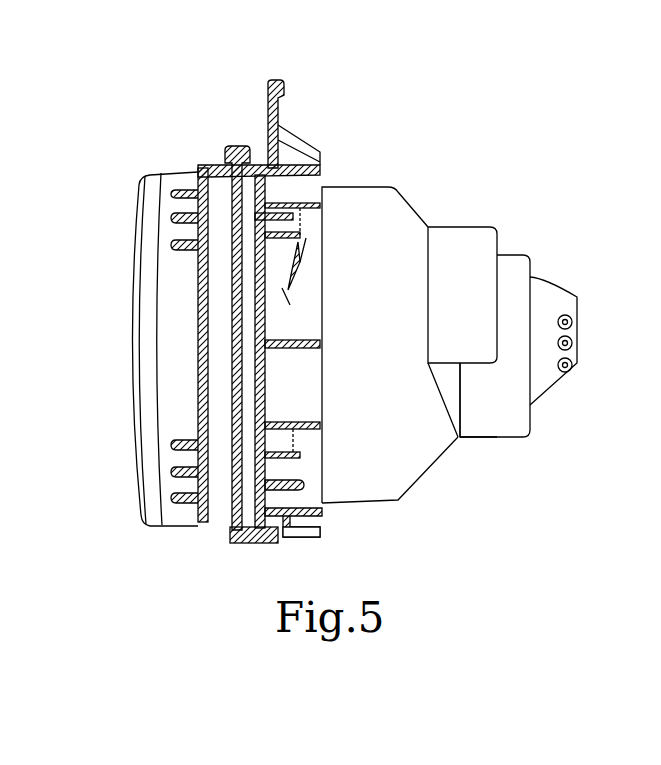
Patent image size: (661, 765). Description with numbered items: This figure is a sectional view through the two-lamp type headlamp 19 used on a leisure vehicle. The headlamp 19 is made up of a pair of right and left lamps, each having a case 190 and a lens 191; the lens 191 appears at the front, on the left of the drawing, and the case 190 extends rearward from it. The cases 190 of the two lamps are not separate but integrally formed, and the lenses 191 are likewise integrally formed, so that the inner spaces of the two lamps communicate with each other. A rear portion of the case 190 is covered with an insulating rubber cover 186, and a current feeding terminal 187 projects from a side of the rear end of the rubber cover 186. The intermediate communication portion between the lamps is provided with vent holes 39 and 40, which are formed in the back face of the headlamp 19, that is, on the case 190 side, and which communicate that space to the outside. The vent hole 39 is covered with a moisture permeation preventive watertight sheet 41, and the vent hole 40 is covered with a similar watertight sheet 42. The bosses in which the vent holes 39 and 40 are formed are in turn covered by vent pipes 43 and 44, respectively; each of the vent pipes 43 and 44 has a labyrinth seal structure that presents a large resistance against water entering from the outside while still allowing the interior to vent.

The two-lamp type headlamp 19 is at (349, 112).
The vent hole 39 is at (300, 200).
The vent hole 40 is at (300, 468).
The moisture permeation preventive watertight sheet 41 is at (300, 218).
The moisture permeation preventive watertight sheet 42 is at (305, 444).
The vent pipe 43 is at (295, 280).
The vent pipe 44 is at (300, 412).
The insulating rubber cover 186 is at (497, 432).
The current feeding terminal 187 is at (563, 298).
The case 190 is at (400, 203).
The lens 191 is at (178, 522).